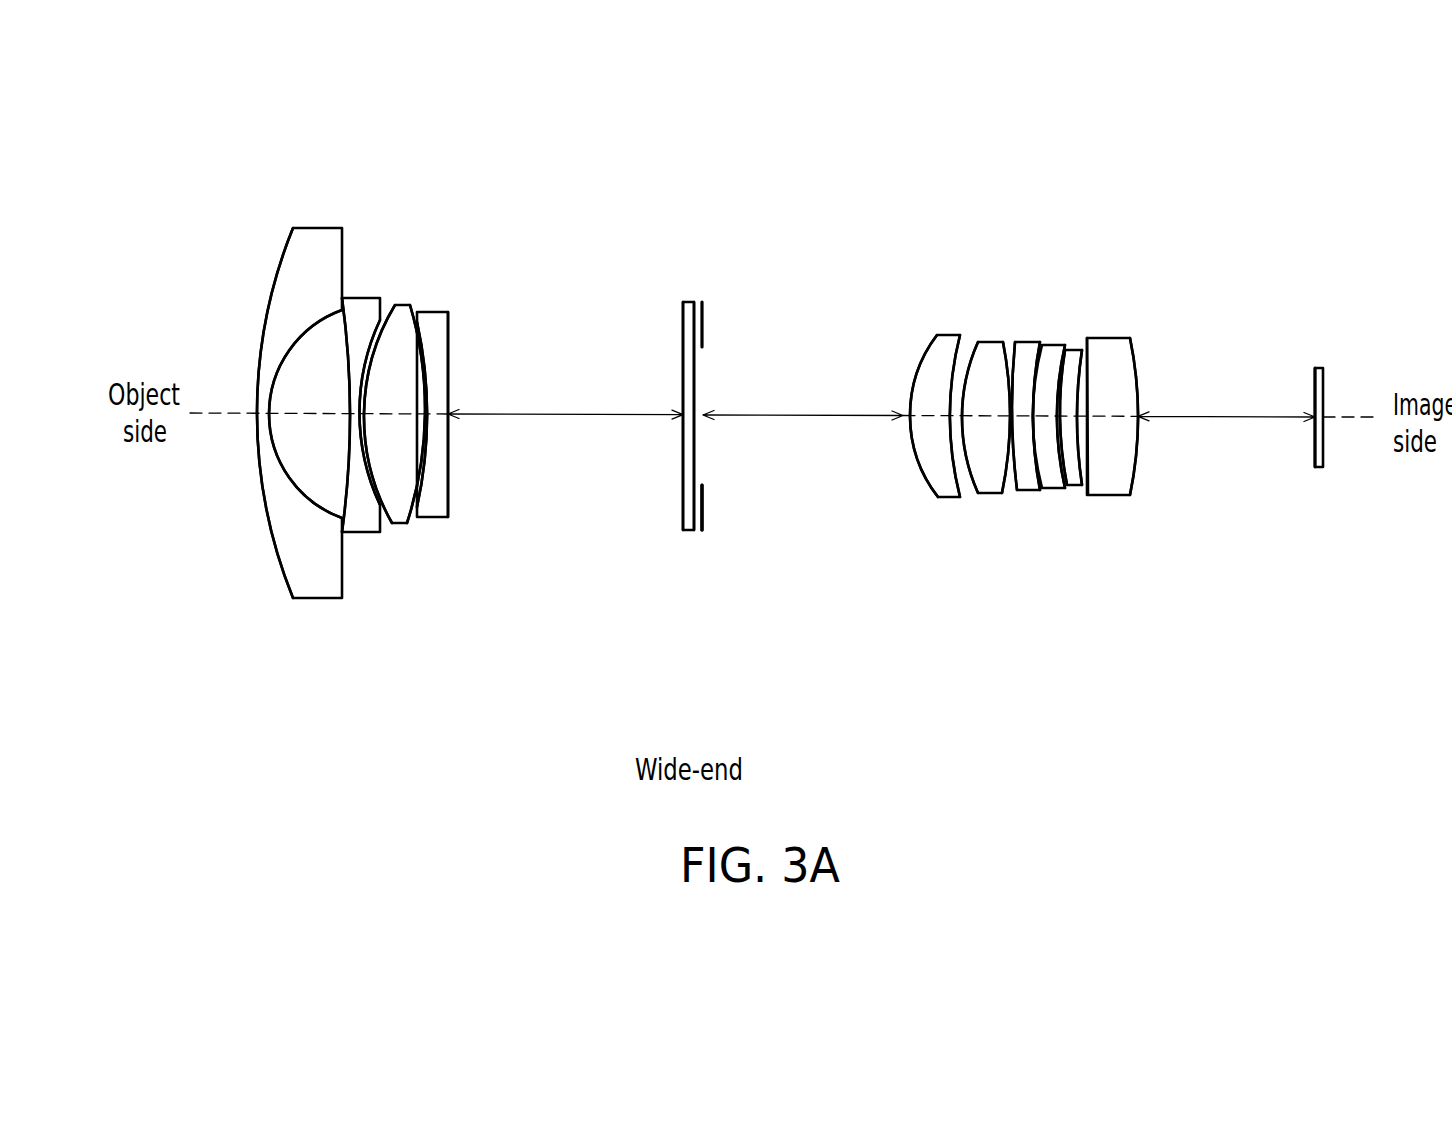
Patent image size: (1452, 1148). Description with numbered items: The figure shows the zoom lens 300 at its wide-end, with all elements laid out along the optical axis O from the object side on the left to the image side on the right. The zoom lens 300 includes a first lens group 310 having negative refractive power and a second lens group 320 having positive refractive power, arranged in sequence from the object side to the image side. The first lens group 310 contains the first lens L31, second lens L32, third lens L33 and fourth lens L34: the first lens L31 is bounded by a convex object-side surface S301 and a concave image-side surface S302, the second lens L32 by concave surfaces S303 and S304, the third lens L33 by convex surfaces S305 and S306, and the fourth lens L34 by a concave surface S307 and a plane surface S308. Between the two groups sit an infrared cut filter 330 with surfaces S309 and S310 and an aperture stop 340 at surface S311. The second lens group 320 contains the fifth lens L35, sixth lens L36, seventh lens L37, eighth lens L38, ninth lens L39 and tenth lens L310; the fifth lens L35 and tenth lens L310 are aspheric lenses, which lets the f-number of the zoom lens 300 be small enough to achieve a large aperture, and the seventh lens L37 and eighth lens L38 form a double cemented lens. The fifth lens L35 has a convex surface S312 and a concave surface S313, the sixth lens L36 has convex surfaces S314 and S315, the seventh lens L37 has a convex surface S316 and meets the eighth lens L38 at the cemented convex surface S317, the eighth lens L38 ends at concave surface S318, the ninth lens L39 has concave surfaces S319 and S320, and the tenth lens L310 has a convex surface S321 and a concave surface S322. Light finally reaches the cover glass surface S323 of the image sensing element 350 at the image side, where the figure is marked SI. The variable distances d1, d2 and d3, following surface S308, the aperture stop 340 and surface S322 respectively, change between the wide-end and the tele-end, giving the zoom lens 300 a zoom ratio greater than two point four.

The zoom lens 300 is at (1451, 806).
The first lens group 310 is at (500, 161).
The second lens group 320 is at (1220, 247).
The infrared cut filter 330 is at (687, 318).
The aperture stop 340 is at (703, 313).
The image sensing element 350 is at (1327, 383).
The image plane SI is at (1308, 369).
The optical axis O is at (241, 402).
The variable distance d1 is at (565, 401).
The variable distance d2 is at (803, 401).
The variable distance d3 is at (1226, 402).
The first lens L31 is at (310, 252).
The second lens L32 is at (365, 312).
The third lens L33 is at (403, 318).
The fourth lens L34 is at (435, 320).
The fifth lens L35 is at (925, 358).
The sixth lens L36 is at (987, 358).
The seventh lens L37 is at (1025, 352).
The eighth lens L38 is at (1052, 358).
The ninth lens L39 is at (1073, 358).
The tenth lens L310 is at (1118, 348).
The object-side surface of first lens S301 is at (256, 535).
The image-side surface of first lens S302 is at (287, 464).
The object-side surface of second lens S303 is at (335, 450).
The image-side surface of second lens S304 is at (367, 344).
The object-side surface of third lens S305 is at (389, 482).
The image-side surface of third lens S306 is at (409, 362).
The object-side surface of fourth lens S307 is at (439, 476).
The image-side surface of fourth lens S308 is at (460, 438).
The object-side surface of infrared cut filter S309 is at (670, 500).
The image-side surface of infrared cut filter S310 is at (706, 518).
The aperture stop surface S311 is at (714, 500).
The object-side surface of fifth lens S312 is at (899, 480).
The image-side surface of fifth lens S313 is at (945, 380).
The object-side surface of sixth lens S314 is at (974, 468).
The image-side surface of sixth lens S315 is at (996, 378).
The object-side surface of seventh lens S316 is at (1023, 480).
The cemented surface of seventh and eighth lenses S317 is at (1044, 450).
The image-side surface of eighth lens S318 is at (1047, 382).
The object-side surface of ninth lens S319 is at (1083, 480).
The image-side surface of ninth lens S320 is at (1074, 378).
The object-side surface of tenth lens S321 is at (1098, 458).
The image-side surface of tenth lens S322 is at (1150, 438).
The cover glass surface of image sensing element S323 is at (1303, 447).